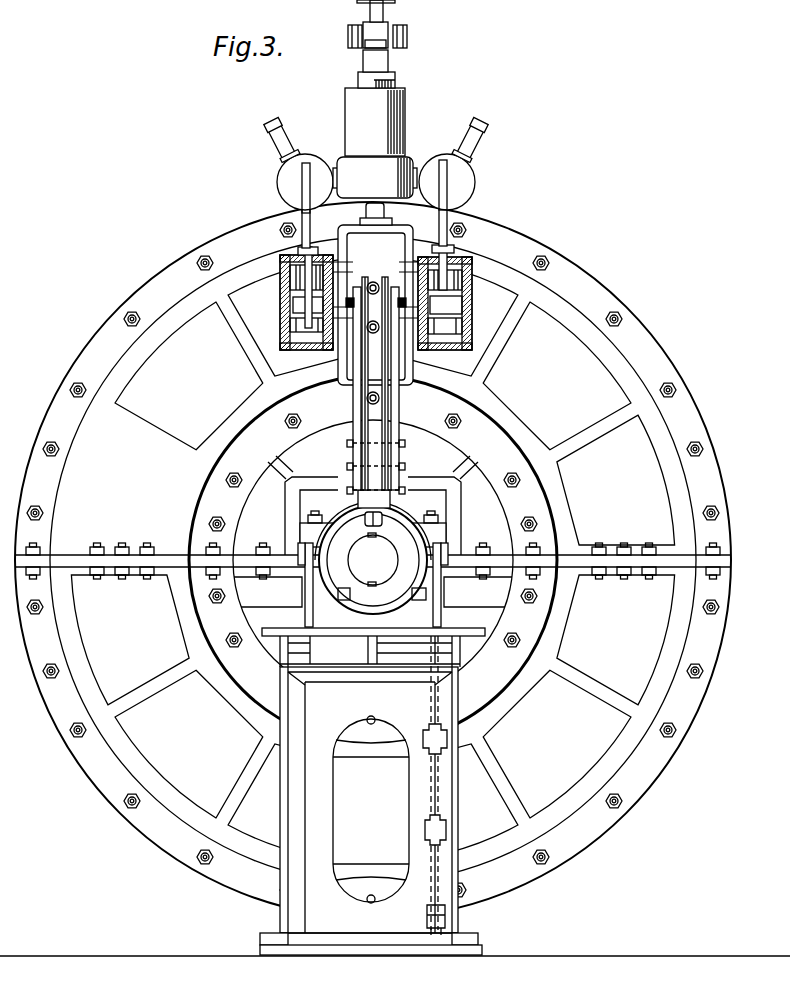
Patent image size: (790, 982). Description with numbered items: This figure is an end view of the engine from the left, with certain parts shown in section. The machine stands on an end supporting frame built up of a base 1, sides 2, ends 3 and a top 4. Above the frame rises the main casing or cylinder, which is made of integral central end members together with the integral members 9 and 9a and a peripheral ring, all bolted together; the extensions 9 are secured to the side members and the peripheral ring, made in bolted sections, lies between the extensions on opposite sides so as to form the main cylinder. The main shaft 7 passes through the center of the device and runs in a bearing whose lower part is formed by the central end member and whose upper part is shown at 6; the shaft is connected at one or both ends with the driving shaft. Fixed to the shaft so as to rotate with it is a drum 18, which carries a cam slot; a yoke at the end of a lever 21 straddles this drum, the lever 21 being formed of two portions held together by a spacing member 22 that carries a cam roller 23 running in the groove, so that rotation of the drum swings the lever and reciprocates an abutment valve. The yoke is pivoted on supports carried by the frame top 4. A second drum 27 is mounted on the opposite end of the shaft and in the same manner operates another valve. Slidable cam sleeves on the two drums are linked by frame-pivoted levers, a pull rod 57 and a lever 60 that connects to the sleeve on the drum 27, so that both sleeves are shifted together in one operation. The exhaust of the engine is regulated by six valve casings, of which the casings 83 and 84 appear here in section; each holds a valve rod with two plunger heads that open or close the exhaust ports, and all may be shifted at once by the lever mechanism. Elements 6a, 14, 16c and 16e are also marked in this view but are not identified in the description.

The base 1 is at (317, 939).
The sides 2 is at (282, 802).
The ends 3 is at (371, 820).
The tops 4 is at (470, 634).
The upper part of the bearing 6 is at (355, 537).
The casing section 6a is at (460, 531).
The main shaft 7 is at (373, 559).
The integral members 9 is at (373, 744).
The integral member 9a is at (373, 376).
The valve cylinder 14 is at (375, 124).
The valve stem 16c is at (388, 13).
The valve handle 16e is at (369, 8).
The drum 18 is at (373, 558).
The lever 21 is at (352, 402).
The spacing member 22 is at (374, 499).
The cam roller 23 is at (385, 524).
The drum 27 is at (338, 597).
The pull rod 57 is at (448, 926).
The lever 60 is at (436, 706).
The valve casing 83 is at (471, 300).
The valve casing 84 is at (282, 311).